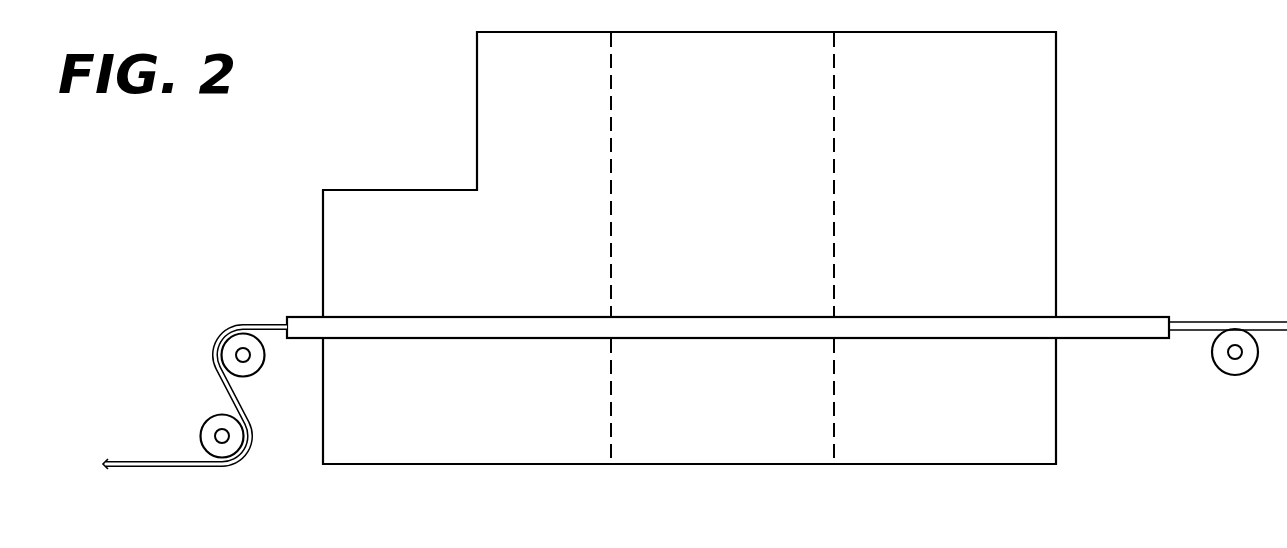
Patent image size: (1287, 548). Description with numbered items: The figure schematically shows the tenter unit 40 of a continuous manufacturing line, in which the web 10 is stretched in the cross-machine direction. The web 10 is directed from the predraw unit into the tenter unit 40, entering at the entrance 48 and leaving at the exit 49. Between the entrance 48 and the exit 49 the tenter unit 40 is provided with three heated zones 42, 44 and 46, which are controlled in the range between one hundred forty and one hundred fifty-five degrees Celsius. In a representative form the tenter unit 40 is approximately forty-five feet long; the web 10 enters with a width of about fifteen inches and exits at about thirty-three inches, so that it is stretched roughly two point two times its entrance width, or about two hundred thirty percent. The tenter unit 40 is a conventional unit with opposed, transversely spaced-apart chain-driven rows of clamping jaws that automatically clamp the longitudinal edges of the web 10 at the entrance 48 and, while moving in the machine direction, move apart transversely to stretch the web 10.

The web 10 is at (247, 321).
The tenter unit 40 is at (1062, 184).
The first heated zone 42 is at (568, 172).
The second heated zone 44 is at (743, 172).
The third heated zone 46 is at (963, 172).
The entrance 48 is at (319, 342).
The exit 49 is at (1057, 340).